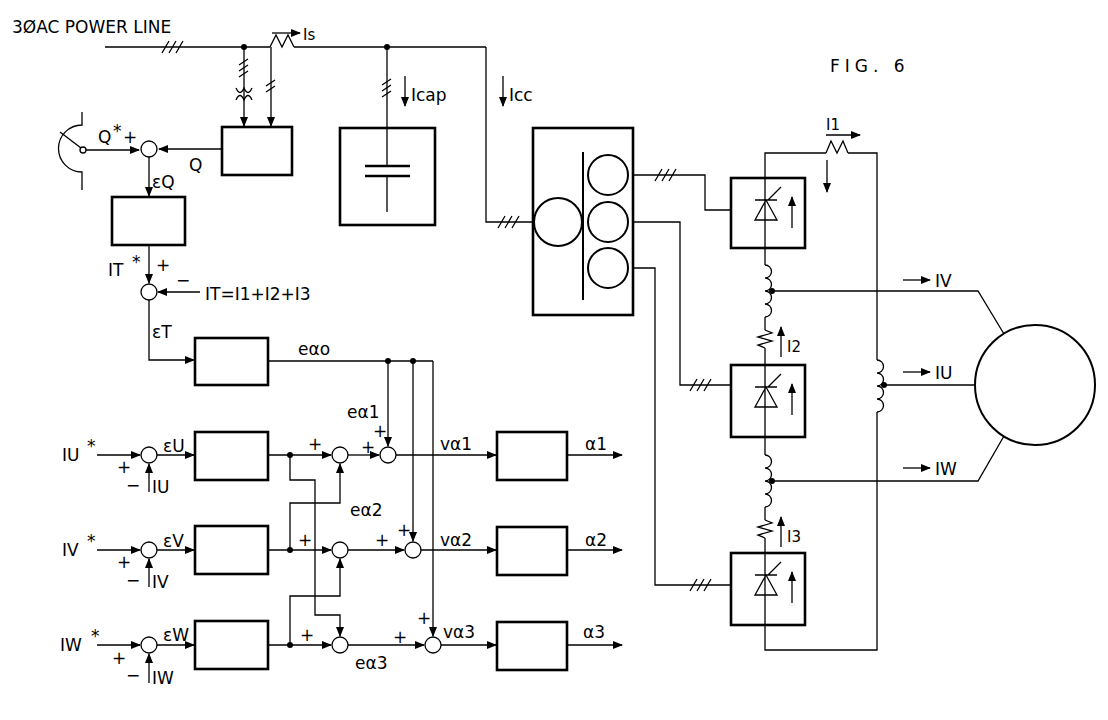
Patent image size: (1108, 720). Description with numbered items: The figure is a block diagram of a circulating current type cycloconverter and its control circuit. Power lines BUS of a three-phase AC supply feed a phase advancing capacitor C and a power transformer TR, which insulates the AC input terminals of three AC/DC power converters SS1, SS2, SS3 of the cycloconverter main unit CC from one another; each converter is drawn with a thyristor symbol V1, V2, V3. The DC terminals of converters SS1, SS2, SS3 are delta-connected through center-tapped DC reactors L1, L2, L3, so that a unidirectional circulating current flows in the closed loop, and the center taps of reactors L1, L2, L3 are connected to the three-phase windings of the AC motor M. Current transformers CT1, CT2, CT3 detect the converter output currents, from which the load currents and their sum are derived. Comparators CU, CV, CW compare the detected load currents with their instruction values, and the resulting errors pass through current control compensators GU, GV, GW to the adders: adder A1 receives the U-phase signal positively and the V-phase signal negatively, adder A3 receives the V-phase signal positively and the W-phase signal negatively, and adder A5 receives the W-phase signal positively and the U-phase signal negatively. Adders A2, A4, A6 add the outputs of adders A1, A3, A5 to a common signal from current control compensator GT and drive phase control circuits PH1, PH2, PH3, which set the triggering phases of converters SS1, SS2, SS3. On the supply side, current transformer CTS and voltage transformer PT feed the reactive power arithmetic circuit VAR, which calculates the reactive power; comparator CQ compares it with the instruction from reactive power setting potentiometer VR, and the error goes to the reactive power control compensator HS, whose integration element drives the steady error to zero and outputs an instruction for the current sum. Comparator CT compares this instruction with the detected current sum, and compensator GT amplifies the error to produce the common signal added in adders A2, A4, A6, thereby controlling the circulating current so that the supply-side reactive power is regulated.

The power lines BUS is at (373, 45).
The current transformer CTS is at (289, 80).
The voltage transformer PT is at (224, 86).
The reactive power arithmetic circuit VAR is at (257, 151).
The reactive power setting potentiometer VR is at (76, 140).
The comparator CQ is at (149, 142).
The reactive power control compensator HS is at (148, 221).
The comparator CT is at (141, 295).
The current control compensator GT is at (231, 361).
The comparator CU is at (149, 447).
The current control compensator GU is at (231, 456).
The adder A1 is at (340, 447).
The adder A2 is at (388, 463).
The phase control circuit PH1 is at (532, 456).
The comparator CV is at (149, 542).
The current control compensator GV is at (231, 550).
The adder A3 is at (340, 542).
The adder A4 is at (413, 558).
The phase control circuit PH2 is at (532, 551).
The comparator CW is at (149, 636).
The current control compensator GW is at (231, 645).
The adder A5 is at (340, 653).
The adder A6 is at (433, 653).
The phase control circuit PH3 is at (532, 646).
The phase advancing capacitor C is at (410, 225).
The power transformer TR is at (607, 128).
The cycloconverter main unit CC is at (778, 108).
The AC/DC power converter SS1 is at (750, 178).
The AC/DC power converter SS2 is at (731, 431).
The AC/DC power converter SS3 is at (731, 619).
The thyristor V1 is at (793, 213).
The thyristor V2 is at (793, 401).
The thyristor V3 is at (793, 589).
The current transformer CT1 is at (843, 166).
The current transformer CT2 is at (744, 342).
The current transformer CT3 is at (744, 532).
The DC reactor L1 is at (863, 386).
The DC reactor L2 is at (749, 289).
The DC reactor L3 is at (749, 478).
The AC motor M is at (1035, 385).